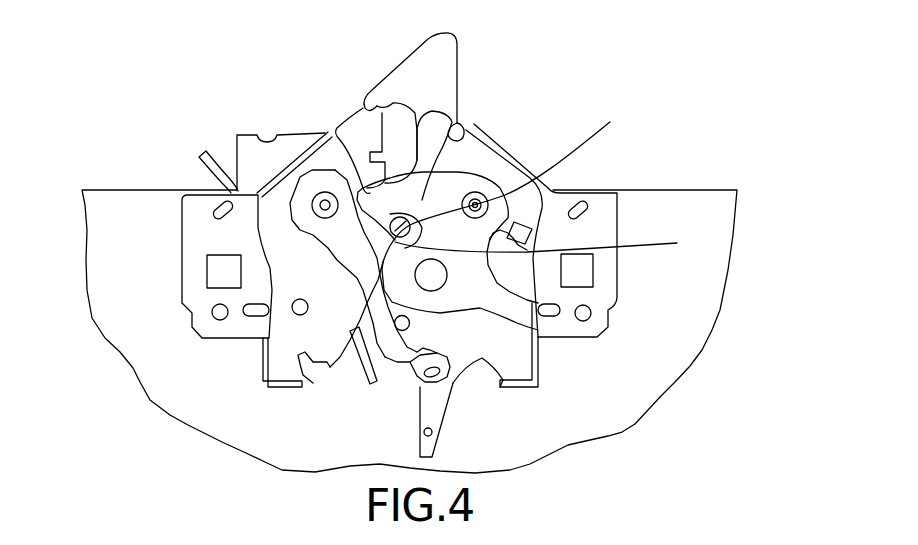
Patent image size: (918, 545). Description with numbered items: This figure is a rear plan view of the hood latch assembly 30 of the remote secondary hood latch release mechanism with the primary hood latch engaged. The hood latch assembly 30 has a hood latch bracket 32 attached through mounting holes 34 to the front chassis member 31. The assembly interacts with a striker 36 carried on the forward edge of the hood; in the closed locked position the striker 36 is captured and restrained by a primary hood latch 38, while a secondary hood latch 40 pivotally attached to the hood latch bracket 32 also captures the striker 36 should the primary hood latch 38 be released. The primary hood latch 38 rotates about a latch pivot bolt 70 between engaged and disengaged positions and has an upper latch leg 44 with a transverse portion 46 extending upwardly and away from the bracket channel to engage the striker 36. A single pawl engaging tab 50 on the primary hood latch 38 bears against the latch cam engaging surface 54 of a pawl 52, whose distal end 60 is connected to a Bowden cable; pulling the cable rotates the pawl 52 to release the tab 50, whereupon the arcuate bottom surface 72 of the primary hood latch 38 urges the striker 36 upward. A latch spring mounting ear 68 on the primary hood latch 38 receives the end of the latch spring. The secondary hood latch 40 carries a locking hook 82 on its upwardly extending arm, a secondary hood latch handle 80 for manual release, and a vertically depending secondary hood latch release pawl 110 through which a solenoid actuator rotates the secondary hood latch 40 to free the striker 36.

The hood latch assembly 30 is at (602, 57).
The front chassis member 31 is at (635, 383).
The hood latch bracket 32 is at (612, 222).
The mounting holes 34 is at (217, 267).
The striker 36 is at (420, 200).
The primary hood latch 38 is at (489, 205).
The secondary hood latch 40 is at (447, 62).
The upper latch leg 44 is at (460, 130).
The transverse portion 46 is at (330, 128).
The pawl engaging tab 50 is at (383, 290).
The pawl 52 is at (313, 227).
The latch cam engaging surface 54 is at (268, 377).
The distal end 60 is at (420, 385).
The latch spring mounting ear 68 is at (532, 232).
The latch pivot bolt 70 is at (514, 178).
The arcuate bottom surface 72 is at (552, 245).
The secondary hood latch handle 80 is at (201, 160).
The locking hook 82 is at (377, 100).
The secondary hood latch release pawl 110 is at (447, 405).